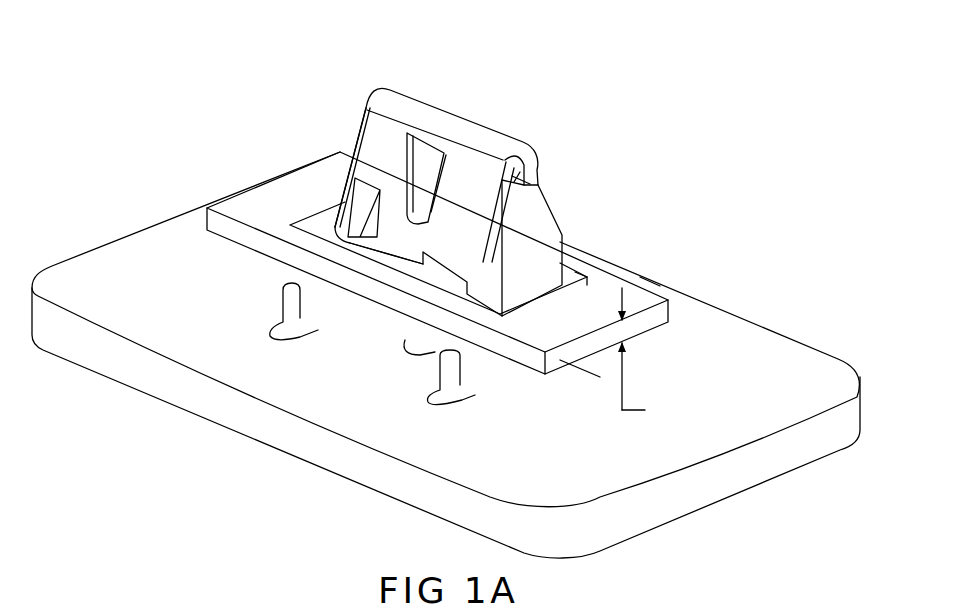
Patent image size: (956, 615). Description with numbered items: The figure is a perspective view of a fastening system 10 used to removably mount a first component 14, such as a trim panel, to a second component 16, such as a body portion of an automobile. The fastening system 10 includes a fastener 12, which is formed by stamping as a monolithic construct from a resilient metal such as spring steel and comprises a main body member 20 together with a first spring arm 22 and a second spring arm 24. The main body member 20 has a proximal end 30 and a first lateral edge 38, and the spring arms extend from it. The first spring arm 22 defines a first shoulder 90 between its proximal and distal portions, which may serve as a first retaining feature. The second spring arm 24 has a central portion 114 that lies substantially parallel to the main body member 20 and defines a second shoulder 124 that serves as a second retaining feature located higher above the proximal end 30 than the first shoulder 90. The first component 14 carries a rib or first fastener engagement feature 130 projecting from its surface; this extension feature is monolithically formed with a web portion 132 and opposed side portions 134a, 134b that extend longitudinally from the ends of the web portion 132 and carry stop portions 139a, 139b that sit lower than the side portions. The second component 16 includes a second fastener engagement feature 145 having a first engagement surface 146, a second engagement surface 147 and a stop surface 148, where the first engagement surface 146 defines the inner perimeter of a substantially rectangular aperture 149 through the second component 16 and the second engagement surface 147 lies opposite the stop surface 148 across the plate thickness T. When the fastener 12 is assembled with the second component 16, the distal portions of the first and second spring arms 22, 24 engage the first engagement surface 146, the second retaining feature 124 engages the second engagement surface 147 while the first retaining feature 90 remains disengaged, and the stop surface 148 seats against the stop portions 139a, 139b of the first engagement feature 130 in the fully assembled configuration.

The fastening system 10 is at (707, 170).
The fastener 12 is at (424, 225).
The first component 14 is at (133, 222).
The second component 16 is at (586, 362).
The main body member 20 is at (543, 170).
The first spring arm 22 is at (372, 160).
The second spring arm 24 is at (372, 235).
The proximal end 30 is at (388, 85).
The first lateral edge 38 is at (535, 153).
The first shoulder 90 is at (350, 232).
The central portion 114 is at (427, 250).
The second shoulder 124 is at (450, 272).
The first fastener engagement feature 130 is at (566, 213).
The web portion 132 is at (393, 250).
The side portion 134a is at (523, 283).
The side portion 134b is at (357, 118).
The stop portion 139a is at (462, 357).
The stop portion 139b is at (283, 285).
The second fastener engagement feature 145 is at (602, 268).
The first engagement surface 146 is at (567, 280).
The second engagement surface 147 is at (645, 280).
The stop surface 148 is at (503, 374).
The aperture 149 is at (322, 208).
The thickness T is at (641, 355).